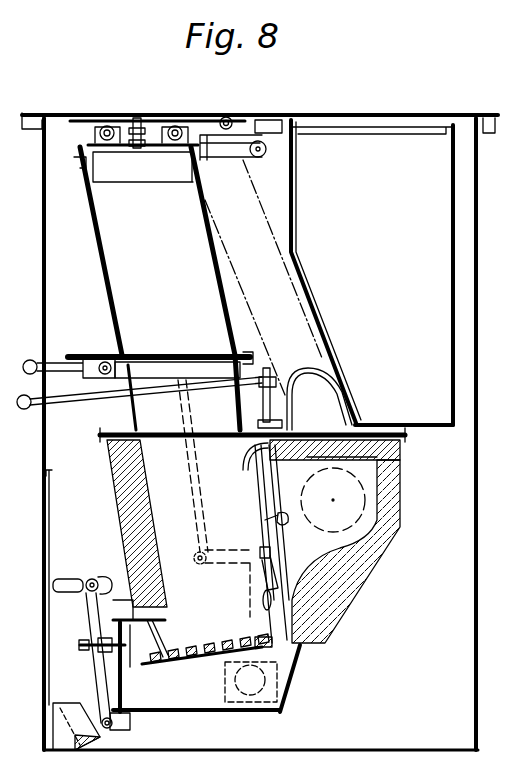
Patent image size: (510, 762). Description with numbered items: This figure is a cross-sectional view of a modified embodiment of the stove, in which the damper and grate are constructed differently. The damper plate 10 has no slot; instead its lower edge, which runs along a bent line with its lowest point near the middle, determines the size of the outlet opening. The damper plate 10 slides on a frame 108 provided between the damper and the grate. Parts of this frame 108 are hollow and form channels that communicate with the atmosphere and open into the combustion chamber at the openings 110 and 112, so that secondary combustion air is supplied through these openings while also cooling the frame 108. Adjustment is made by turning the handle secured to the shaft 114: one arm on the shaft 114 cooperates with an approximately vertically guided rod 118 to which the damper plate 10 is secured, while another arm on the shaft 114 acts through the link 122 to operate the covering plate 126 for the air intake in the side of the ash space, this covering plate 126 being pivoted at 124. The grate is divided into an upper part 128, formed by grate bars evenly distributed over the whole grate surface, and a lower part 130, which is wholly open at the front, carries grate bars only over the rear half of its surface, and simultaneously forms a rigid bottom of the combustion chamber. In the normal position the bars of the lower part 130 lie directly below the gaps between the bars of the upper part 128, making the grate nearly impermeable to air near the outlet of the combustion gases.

The damper plate 10 is at (283, 563).
The frame 108 is at (264, 578).
The opening 110 is at (265, 612).
The opening 112 is at (266, 521).
The shaft 114 is at (68, 405).
The rod 118 is at (282, 480).
The link 122 is at (188, 473).
The pivot 124 is at (262, 548).
The covering plate 126 is at (232, 672).
The upper part of grate 128 is at (198, 650).
The lower part of grate 130 is at (196, 668).